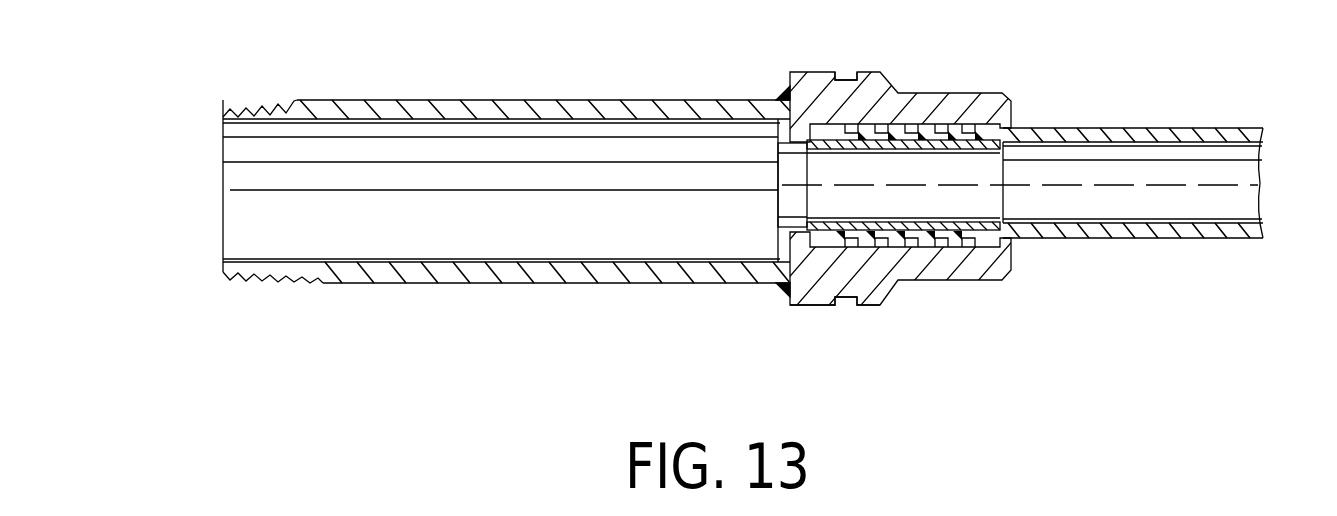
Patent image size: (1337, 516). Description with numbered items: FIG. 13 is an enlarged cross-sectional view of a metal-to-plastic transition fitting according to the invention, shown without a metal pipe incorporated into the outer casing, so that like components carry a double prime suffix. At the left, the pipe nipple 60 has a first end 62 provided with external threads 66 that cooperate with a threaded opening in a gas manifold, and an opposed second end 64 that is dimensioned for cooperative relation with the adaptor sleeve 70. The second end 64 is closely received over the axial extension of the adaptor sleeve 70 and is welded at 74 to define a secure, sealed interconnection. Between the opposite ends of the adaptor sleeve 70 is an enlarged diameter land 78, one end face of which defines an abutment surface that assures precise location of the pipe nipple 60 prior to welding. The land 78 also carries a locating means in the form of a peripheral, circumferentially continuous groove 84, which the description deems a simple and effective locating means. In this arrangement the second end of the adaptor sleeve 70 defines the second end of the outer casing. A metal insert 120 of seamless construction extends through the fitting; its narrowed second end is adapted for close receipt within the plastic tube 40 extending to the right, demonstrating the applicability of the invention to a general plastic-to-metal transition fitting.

The tube 40 is at (1222, 220).
The pipe nipple 60 is at (453, 102).
The first end of pipe nipple 62 is at (223, 117).
The second end of pipe nipple 64 is at (780, 100).
The external threads 66 is at (248, 282).
The adaptor sleeve 70 is at (960, 90).
The weld 74 is at (785, 288).
The land 78 is at (815, 305).
The groove 84 is at (840, 73).
The metal insert 120 is at (977, 217).